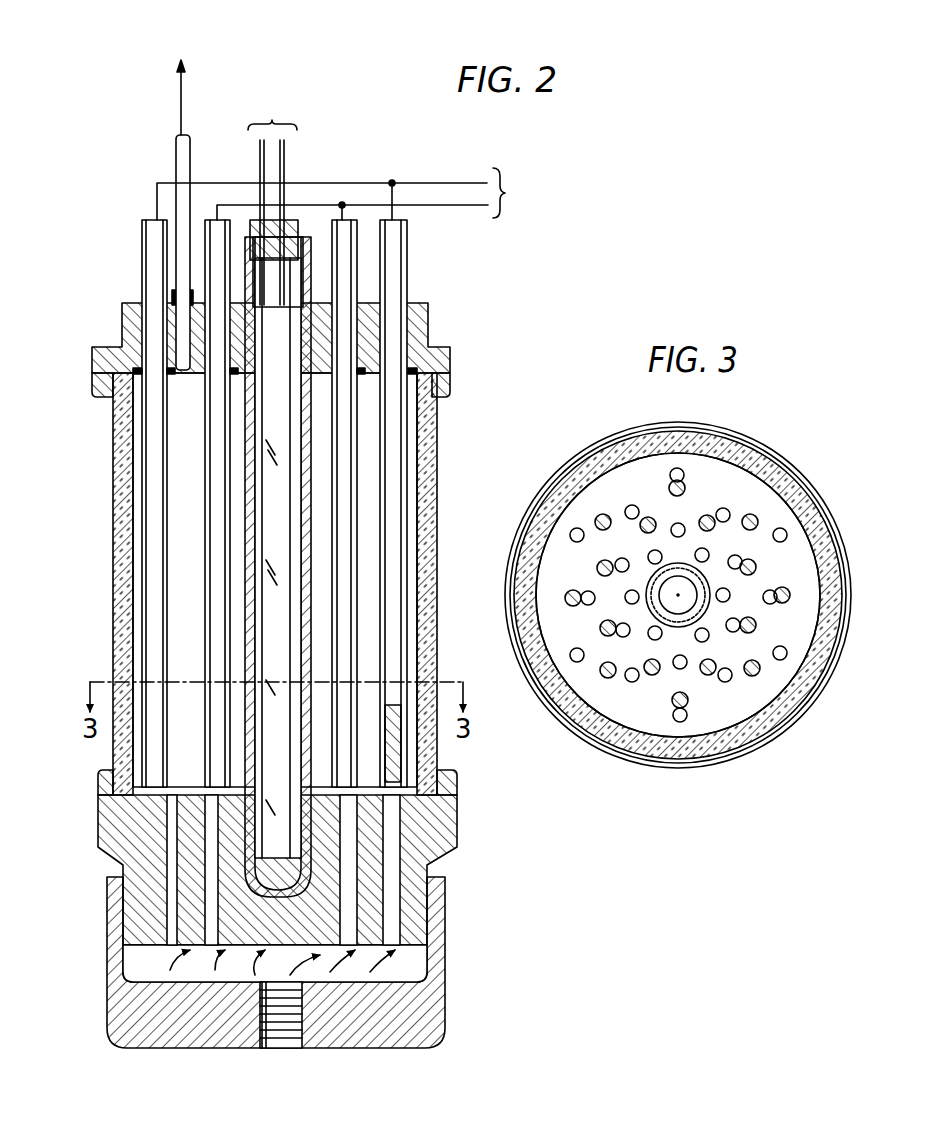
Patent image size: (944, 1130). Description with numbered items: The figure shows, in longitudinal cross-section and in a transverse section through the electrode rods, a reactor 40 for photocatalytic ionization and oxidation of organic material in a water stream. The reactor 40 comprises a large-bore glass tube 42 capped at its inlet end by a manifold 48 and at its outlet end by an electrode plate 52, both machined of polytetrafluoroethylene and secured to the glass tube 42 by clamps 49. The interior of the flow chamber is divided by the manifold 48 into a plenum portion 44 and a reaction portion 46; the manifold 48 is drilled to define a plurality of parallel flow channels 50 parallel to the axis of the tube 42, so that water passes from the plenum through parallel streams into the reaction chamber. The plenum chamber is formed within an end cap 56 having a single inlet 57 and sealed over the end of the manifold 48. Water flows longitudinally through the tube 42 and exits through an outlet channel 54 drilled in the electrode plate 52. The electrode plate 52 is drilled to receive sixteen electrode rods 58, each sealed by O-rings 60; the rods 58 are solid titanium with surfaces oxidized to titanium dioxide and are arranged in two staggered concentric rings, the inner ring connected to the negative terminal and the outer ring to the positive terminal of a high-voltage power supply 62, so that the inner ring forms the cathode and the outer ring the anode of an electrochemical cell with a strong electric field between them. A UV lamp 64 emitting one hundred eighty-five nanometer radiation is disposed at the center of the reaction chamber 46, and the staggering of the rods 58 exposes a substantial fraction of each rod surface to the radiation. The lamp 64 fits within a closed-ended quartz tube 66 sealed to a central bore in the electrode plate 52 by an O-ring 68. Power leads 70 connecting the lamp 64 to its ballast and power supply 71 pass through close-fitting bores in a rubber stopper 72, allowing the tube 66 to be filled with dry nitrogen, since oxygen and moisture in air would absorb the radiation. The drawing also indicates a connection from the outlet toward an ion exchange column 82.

In FIG. 2, the reactor 40 is at (452, 748).
In FIG. 2, the glass tube 42 is at (427, 594).
In FIG. 3, the glass tube 42 is at (610, 455).
In FIG. 2, the plenum portion 44 is at (410, 961).
In FIG. 2, the reaction portion 46 is at (370, 657).
In FIG. 2, the manifold 48 is at (430, 833).
In FIG. 3, the manifold 48 is at (728, 700).
In FIG. 2, the clamps 49 is at (90, 380).
In FIG. 3, the clamps 49 is at (730, 425).
In FIG. 2, the flow channels 50 is at (218, 927).
In FIG. 3, the flow channels 50 is at (632, 505).
In FIG. 2, the electrode plate 52 is at (420, 315).
In FIG. 2, the outlet channel 54 is at (165, 338).
In FIG. 2, the end cap 56 is at (388, 1048).
In FIG. 2, the inlet 57 is at (280, 1048).
In FIG. 2, the electrode rods 58 is at (343, 492).
In FIG. 3, the electrode rods 58 is at (603, 562).
In FIG. 2, the O-rings 60 is at (448, 354).
In FIG. 2, the high-voltage power supply 62 is at (437, 191).
In FIG. 2, the UV lamp 64 is at (292, 501).
In FIG. 3, the UV lamp 64 is at (680, 585).
In FIG. 2, the quartz tube 66 is at (307, 240).
In FIG. 3, the quartz tube 66 is at (710, 588).
In FIG. 2, the O-ring 68 is at (310, 303).
In FIG. 2, the power leads 70 is at (264, 150).
In FIG. 2, the ballast and power supply 71 is at (307, 80).
In FIG. 2, the rubber stopper 72 is at (262, 220).
In FIG. 2, the ion exchange column 82 is at (158, 186).